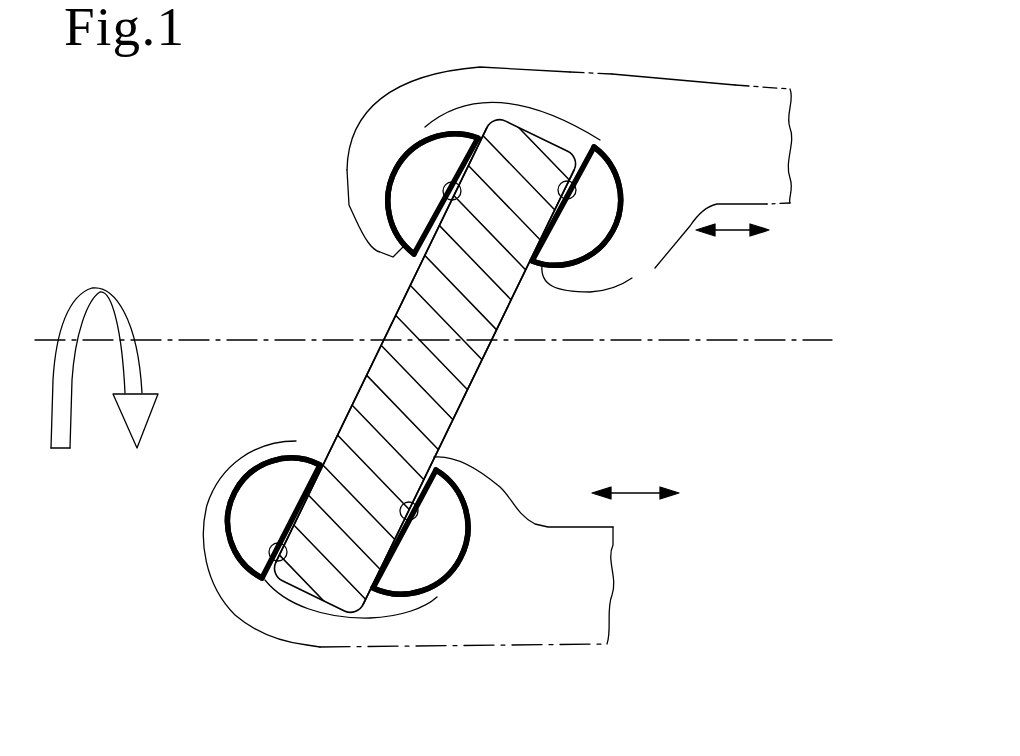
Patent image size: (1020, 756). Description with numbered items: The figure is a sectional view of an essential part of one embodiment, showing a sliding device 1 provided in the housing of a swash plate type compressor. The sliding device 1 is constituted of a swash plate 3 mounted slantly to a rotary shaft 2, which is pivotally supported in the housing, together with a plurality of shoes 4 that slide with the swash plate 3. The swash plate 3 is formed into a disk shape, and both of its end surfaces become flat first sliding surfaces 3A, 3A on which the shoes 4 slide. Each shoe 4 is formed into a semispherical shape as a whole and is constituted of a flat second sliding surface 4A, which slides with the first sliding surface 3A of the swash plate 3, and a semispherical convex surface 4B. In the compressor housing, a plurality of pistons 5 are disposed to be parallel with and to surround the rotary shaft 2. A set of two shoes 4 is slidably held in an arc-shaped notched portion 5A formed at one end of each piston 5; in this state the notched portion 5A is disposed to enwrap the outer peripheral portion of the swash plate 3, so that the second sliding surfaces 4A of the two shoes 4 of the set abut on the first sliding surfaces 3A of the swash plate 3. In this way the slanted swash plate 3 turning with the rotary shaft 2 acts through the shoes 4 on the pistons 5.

The sliding device 1 is at (458, 427).
The rotary shaft 2 is at (257, 340).
The swash plate 3 is at (368, 375).
The first sliding surface 3A is at (402, 300).
The shoe 4 is at (397, 200).
The second sliding surface 4A is at (450, 181).
The semispherical convex surface 4B is at (418, 135).
The piston 5 is at (775, 138).
The notched portion 5A is at (600, 137).